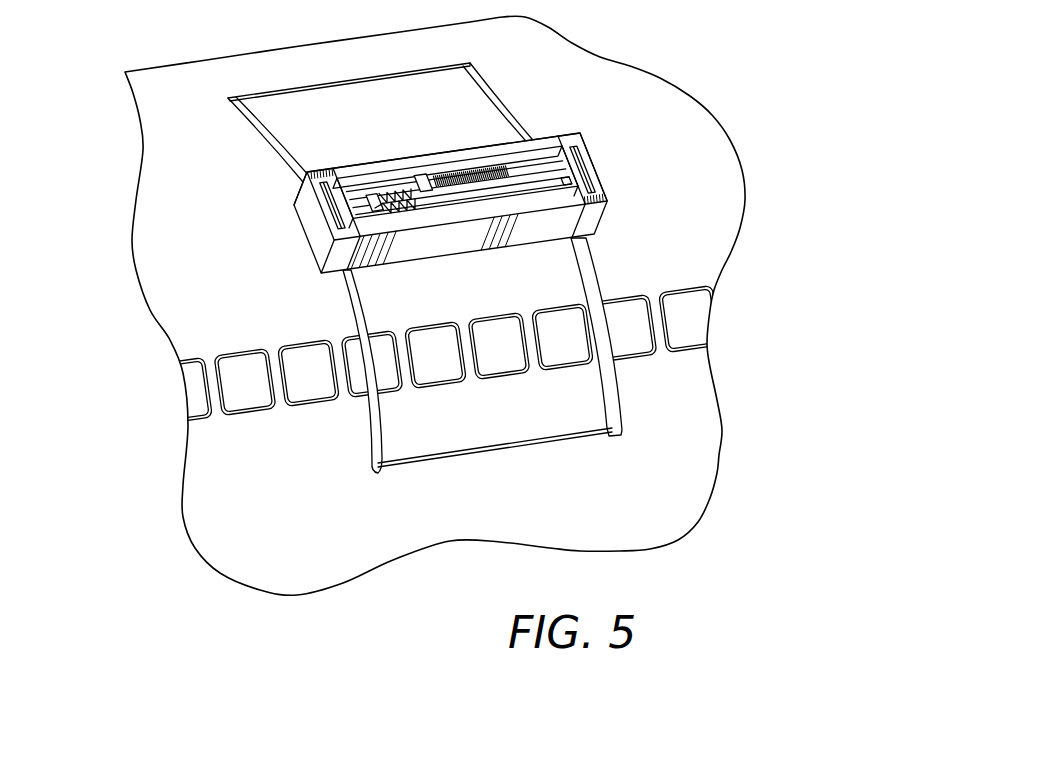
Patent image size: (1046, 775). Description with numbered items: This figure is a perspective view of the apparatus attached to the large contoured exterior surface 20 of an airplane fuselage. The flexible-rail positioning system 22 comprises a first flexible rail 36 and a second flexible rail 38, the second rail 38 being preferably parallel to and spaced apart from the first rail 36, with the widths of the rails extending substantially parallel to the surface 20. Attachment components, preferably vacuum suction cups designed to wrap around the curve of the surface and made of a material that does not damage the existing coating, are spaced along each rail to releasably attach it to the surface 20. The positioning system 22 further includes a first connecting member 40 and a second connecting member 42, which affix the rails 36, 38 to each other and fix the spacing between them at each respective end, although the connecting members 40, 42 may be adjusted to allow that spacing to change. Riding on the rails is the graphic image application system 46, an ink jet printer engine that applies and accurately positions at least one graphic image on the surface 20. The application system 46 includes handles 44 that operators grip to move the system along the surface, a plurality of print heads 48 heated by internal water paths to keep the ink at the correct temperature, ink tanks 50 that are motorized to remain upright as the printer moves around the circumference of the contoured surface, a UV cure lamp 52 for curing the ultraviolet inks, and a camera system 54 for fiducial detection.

The large contoured exterior surface 20 is at (657, 103).
The flexible-rail positioning system 22 is at (592, 264).
The first flexible rail 36 is at (273, 147).
The second flexible rail 38 is at (510, 98).
The first connecting member 40 is at (395, 93).
The second connecting member 42 is at (485, 447).
The handles 44 is at (327, 203).
The graphic image application system 46 is at (455, 224).
The print heads 48 is at (375, 208).
The ink tanks 50 is at (393, 195).
The UV cure lamp 52 is at (385, 210).
The camera system 54 is at (418, 187).